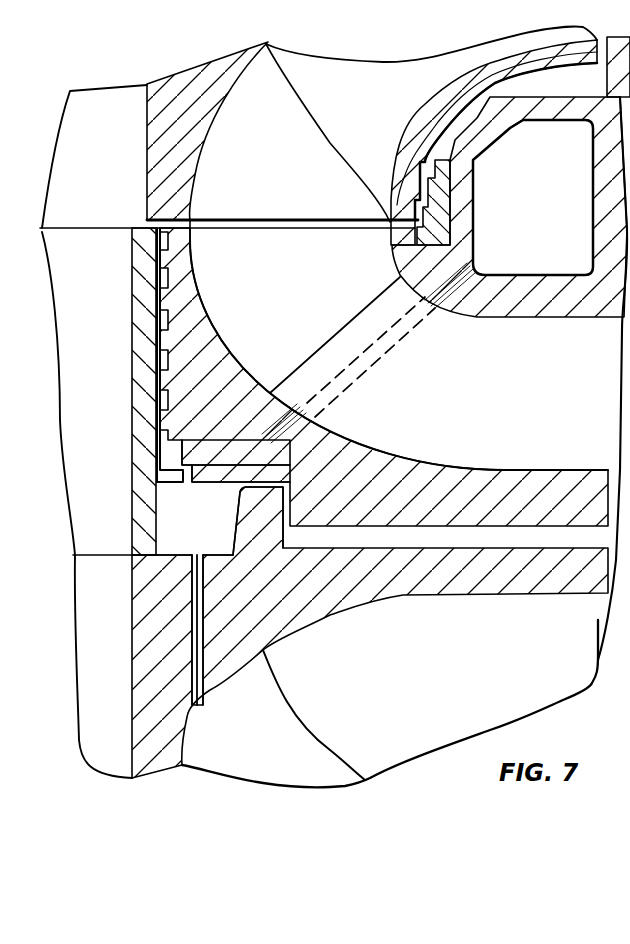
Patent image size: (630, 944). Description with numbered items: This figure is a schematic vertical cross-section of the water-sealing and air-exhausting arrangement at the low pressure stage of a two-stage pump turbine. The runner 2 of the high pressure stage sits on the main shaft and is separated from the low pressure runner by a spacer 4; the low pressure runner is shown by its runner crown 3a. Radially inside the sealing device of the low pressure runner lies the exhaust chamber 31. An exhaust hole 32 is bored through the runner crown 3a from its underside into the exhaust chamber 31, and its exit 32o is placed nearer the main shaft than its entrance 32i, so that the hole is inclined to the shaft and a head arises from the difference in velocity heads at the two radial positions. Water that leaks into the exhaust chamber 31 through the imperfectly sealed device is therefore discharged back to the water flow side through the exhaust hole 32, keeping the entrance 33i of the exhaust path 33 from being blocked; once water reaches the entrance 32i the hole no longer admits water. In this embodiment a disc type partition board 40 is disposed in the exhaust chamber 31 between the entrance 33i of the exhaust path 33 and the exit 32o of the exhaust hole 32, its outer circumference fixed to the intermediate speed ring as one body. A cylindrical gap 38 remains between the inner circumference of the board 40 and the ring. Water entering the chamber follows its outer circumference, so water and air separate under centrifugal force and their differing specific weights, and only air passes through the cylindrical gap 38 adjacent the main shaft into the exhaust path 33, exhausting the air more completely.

The runner of the high pressure stage 2 is at (185, 87).
The spacer 4 is at (140, 347).
The runner crown 3a is at (510, 592).
The exhaust chamber of the low pressure stage 31 is at (170, 500).
The exhaust hole 32 is at (200, 598).
The exit of the exhaust hole 32o is at (200, 555).
The entrance of the exhaust hole 32i is at (205, 696).
The exhaust path 33 is at (307, 417).
The entrance of the exhaust path 33i is at (283, 444).
The cylindrical gap 38 is at (158, 475).
The disc type partition board 40 is at (247, 470).